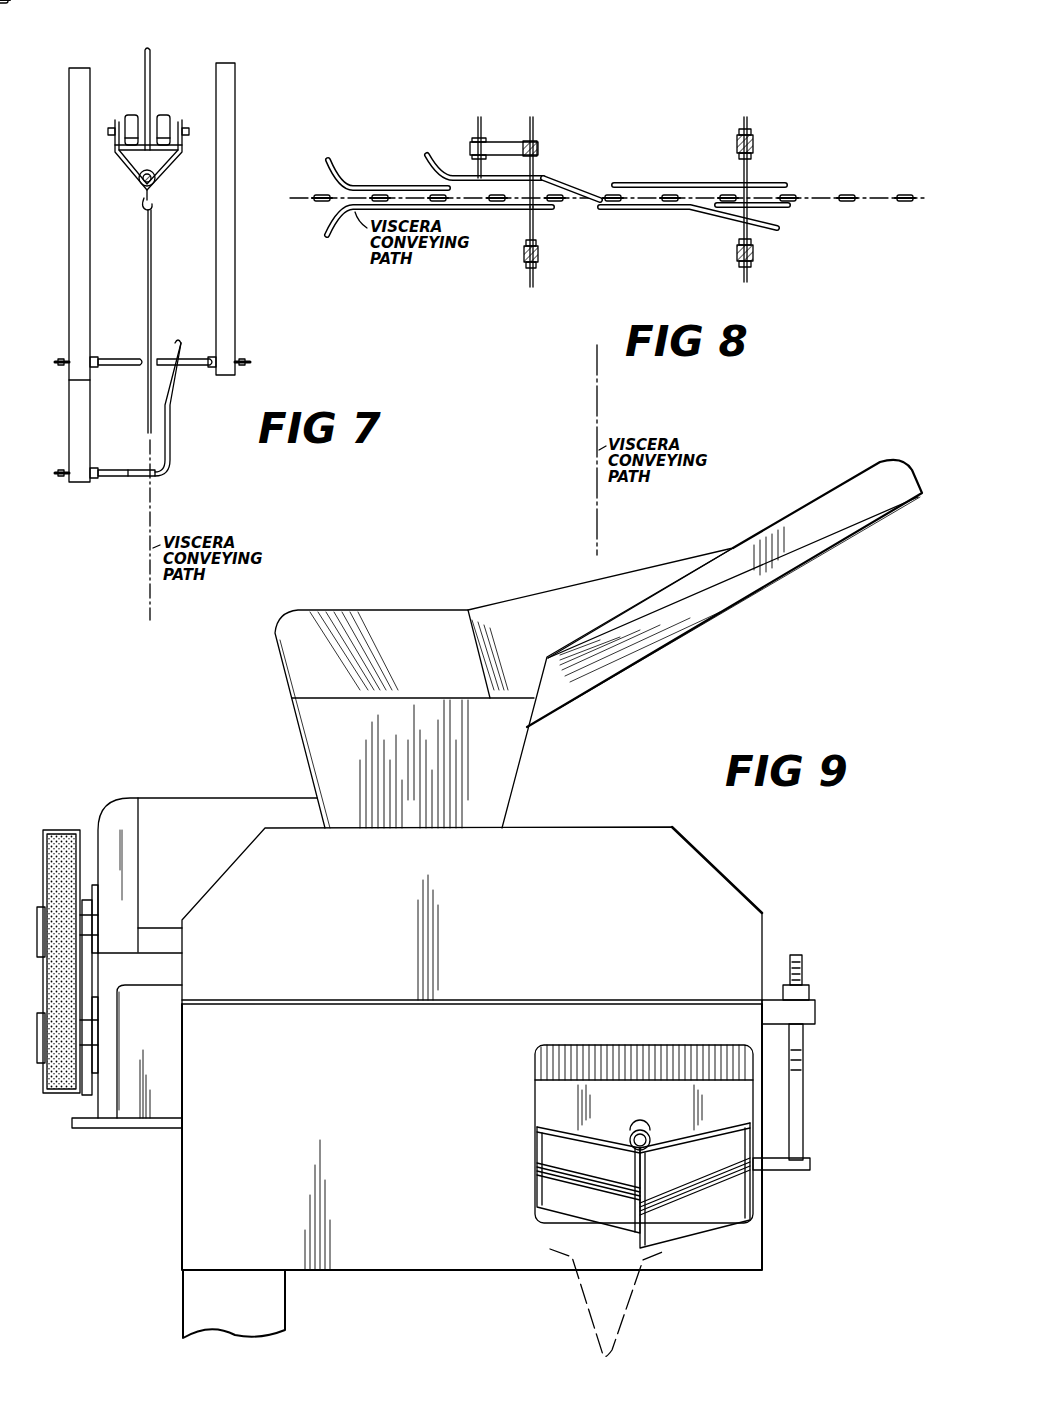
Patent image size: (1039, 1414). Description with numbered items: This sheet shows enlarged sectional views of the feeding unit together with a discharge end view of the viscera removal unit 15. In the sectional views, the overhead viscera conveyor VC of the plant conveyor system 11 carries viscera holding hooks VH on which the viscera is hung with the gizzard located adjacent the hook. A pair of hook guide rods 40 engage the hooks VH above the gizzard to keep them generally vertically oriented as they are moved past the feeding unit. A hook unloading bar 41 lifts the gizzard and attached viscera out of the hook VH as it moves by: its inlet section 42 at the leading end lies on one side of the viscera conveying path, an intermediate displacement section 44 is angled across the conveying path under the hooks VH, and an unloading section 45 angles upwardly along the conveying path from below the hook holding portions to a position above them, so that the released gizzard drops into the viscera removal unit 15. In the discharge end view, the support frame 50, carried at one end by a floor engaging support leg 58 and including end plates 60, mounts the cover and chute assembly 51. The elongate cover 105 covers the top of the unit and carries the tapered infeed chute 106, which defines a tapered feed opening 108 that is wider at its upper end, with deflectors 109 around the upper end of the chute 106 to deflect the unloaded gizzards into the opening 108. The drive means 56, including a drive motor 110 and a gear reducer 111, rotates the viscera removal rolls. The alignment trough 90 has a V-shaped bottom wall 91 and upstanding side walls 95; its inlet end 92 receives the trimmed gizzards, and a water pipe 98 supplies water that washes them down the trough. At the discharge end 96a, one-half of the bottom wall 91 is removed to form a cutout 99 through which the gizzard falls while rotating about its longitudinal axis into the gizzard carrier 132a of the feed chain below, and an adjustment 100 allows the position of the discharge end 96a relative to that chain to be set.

In FIG. 7, the gizzard processing plant conveyor system 11 is at (155, 40).
In FIG. 7, the viscera conveyor VC is at (183, 120).
In FIG. 7, the viscera holding hooks VH is at (153, 270).
In FIG. 8, the viscera holding hooks VH is at (322, 195).
In FIG. 7, the hook guide rods 40 is at (126, 358).
In FIG. 8, the hook guide rods 40 is at (378, 186).
In FIG. 7, the hook unloading bar 41 is at (170, 464).
In FIG. 7, the inlet section 42 is at (122, 480).
In FIG. 8, the inlet section 42 is at (495, 178).
In FIG. 7, the intermediate displacement section 44 is at (156, 477).
In FIG. 8, the intermediate displacement section 44 is at (560, 190).
In FIG. 7, the unloading section 45 is at (167, 428).
In FIG. 8, the unloading section 45 is at (617, 208).
In FIG. 9, the viscera removal unit 15 is at (264, 727).
In FIG. 9, the support frame 50 is at (178, 1232).
In FIG. 9, the cover and chute assembly 51 is at (650, 823).
In FIG. 9, the drive means 56 is at (78, 808).
In FIG. 9, the floor engaging support leg 58 is at (192, 1296).
In FIG. 9, the end plates 60 is at (368, 1262).
In FIG. 9, the alignment trough 90 is at (760, 1207).
In FIG. 9, the bottom wall 91 is at (618, 1142).
In FIG. 9, the inlet end 92 is at (545, 1116).
In FIG. 9, the upstanding side walls 95 is at (540, 1180).
In FIG. 9, the discharge end 96a is at (690, 1238).
In FIG. 9, the water pipe 98 is at (645, 1128).
In FIG. 9, the cutout 99 is at (605, 1232).
In FIG. 9, the adjustment 100 is at (806, 1062).
In FIG. 9, the elongate cover 105 is at (720, 882).
In FIG. 9, the tapered infeed chute 106 is at (518, 766).
In FIG. 9, the tapered feed opening 108 is at (445, 692).
In FIG. 9, the deflectors 109 is at (548, 605).
In FIG. 9, the drive motor 110 is at (180, 800).
In FIG. 9, the gear reducer 111 is at (170, 968).
In FIG. 9, the gizzard carrier 132a is at (636, 1318).